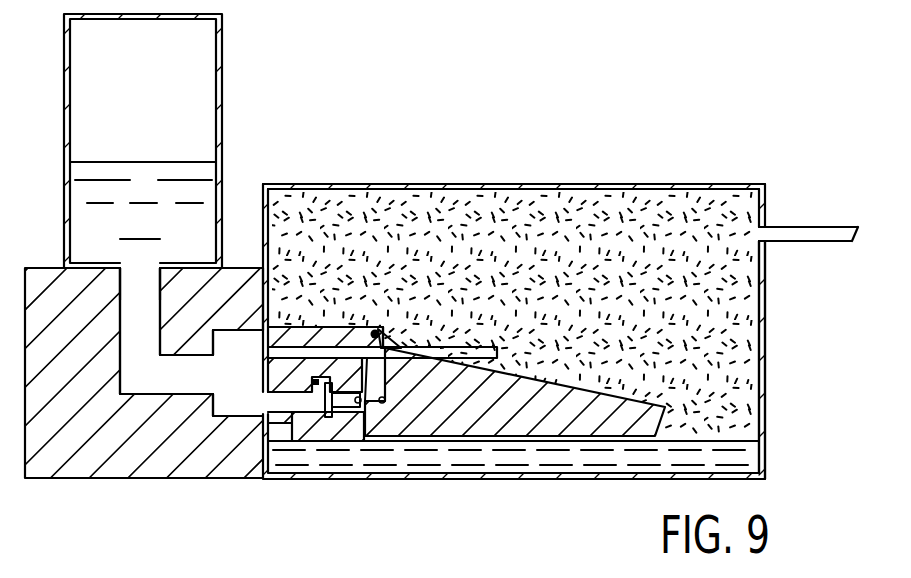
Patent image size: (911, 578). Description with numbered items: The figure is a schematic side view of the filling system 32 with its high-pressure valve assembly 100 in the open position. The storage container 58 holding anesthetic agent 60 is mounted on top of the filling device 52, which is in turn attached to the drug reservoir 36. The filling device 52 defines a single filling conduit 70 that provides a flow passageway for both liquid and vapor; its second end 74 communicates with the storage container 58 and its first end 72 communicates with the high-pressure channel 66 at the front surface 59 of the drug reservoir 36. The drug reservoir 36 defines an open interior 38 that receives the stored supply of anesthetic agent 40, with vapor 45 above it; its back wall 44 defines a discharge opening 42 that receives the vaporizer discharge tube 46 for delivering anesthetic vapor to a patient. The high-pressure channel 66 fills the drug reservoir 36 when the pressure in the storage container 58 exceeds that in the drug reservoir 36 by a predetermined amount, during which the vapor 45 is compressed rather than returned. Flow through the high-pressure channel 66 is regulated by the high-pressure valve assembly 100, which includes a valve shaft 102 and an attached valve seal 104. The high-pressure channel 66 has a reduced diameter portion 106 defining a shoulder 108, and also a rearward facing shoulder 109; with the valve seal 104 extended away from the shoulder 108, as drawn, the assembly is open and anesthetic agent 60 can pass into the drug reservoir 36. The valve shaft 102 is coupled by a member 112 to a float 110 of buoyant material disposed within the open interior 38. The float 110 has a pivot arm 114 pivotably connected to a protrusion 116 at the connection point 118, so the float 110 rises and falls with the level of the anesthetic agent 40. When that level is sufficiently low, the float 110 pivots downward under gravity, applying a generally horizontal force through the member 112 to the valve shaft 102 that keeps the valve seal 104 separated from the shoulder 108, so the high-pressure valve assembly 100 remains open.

The filling system 32 is at (316, 122).
The drug reservoir 36 is at (390, 183).
The open interior 38 is at (448, 215).
The anesthetic agent 40 is at (680, 440).
The discharge opening 42 is at (758, 238).
The back wall 44 is at (767, 452).
The vapor 45 is at (660, 204).
The vaporizer discharge tube 46 is at (819, 226).
The filling device 52 is at (123, 467).
The storage container 58 is at (222, 53).
The front surface 59 is at (263, 296).
The anesthetic agent 60 is at (117, 170).
The high-pressure channel 66 is at (263, 402).
The filling conduit 70 is at (163, 385).
The first end 72 is at (263, 423).
The second end 74 is at (137, 277).
The high-pressure valve assembly 100 is at (353, 410).
The valve shaft 102 is at (362, 403).
The valve seal 104 is at (330, 414).
The reduced diameter portion 106 is at (350, 370).
The shoulder 108 is at (330, 375).
The rearward facing shoulder 109 is at (317, 376).
The float 110 is at (560, 382).
The member 112 is at (378, 402).
The pivot arm 114 is at (383, 325).
The protrusion 116 is at (364, 326).
The connection point 118 is at (377, 329).